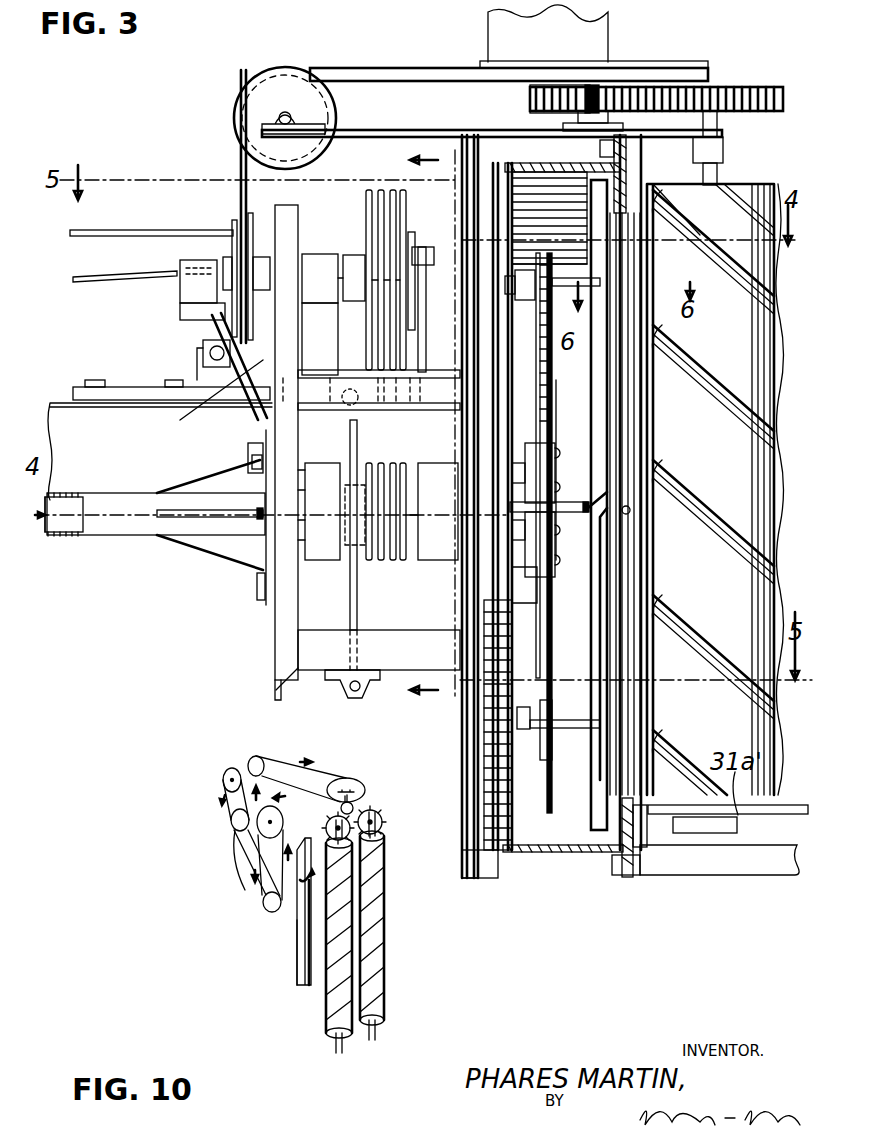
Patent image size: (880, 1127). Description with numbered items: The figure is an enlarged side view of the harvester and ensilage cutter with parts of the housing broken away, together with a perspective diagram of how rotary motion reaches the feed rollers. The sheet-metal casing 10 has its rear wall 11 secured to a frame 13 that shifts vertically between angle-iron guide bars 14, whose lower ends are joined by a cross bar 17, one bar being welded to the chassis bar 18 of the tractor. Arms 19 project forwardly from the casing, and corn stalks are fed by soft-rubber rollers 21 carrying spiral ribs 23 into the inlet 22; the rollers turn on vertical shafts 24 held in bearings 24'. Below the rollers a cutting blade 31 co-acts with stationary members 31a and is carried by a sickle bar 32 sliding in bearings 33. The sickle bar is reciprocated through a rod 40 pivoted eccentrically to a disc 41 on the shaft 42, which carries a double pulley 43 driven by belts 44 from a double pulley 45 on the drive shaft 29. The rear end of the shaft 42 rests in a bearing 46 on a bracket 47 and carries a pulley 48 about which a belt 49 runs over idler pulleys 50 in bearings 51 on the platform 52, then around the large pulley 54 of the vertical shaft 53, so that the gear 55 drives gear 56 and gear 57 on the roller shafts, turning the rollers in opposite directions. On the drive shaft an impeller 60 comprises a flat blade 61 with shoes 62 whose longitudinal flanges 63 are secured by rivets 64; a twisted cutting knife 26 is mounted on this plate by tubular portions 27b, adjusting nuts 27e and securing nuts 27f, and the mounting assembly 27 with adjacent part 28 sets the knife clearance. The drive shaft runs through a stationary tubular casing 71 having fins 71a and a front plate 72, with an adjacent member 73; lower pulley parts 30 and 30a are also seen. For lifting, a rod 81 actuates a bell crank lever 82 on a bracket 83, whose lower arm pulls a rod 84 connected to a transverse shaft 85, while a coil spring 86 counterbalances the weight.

In FIG. 3, the casing 10 is at (560, 840).
In FIG. 3, the rear wall 11 is at (439, 506).
In FIG. 3, the frame 13 is at (405, 662).
In FIG. 3, the guide bars 14 is at (272, 612).
In FIG. 3, the cross bar 17 is at (276, 672).
In FIG. 3, the chassis bar 18 is at (64, 412).
In FIG. 3, the arms 19 is at (765, 875).
In FIG. 3, the rollers 21 is at (748, 398).
In FIG. 10, the rollers 21 is at (373, 975).
In FIG. 3, the inlet 22 is at (625, 230).
In FIG. 3, the spirally extending ribs 23 is at (710, 210).
In FIG. 10, the spirally extending ribs 23 is at (380, 895).
In FIG. 3, the shafts 24 is at (742, 166).
In FIG. 10, the shafts 24 is at (356, 1057).
In FIG. 3, the bearings 24' is at (736, 137).
In FIG. 3, the cutting knife 26 is at (595, 555).
In FIG. 10, the cutting knife 26 is at (300, 960).
In FIG. 3, the housing side plate 27 is at (600, 610).
In FIG. 10, the housing side plate 27 is at (305, 990).
In FIG. 3, the tubular portions 27b is at (562, 288).
In FIG. 3, the adjusting nuts 27e is at (540, 258).
In FIG. 3, the securing nuts 27f is at (528, 720).
In FIG. 3, the guide finger 28 is at (608, 510).
In FIG. 3, the drive shaft 29 is at (68, 520).
In FIG. 10, the drive shaft 29 is at (297, 925).
In FIG. 3, the lower pulley 30 is at (440, 560).
In FIG. 3, the lower drum 30a is at (330, 452).
In FIG. 3, the cutting blade 31 is at (686, 850).
In FIG. 3, the stationary members 31a is at (768, 835).
In FIG. 3, the sickle bar 32 is at (660, 860).
In FIG. 3, the bearings 33 is at (620, 860).
In FIG. 3, the link or rod 40 is at (426, 308).
In FIG. 3, the disc 41 is at (413, 238).
In FIG. 3, the shaft 42 is at (335, 262).
In FIG. 10, the shaft 42 is at (260, 845).
In FIG. 3, the double pulley 43 is at (365, 205).
In FIG. 10, the double pulley 43 is at (262, 880).
In FIG. 3, the belts 44 is at (398, 420).
In FIG. 10, the belts 44 is at (265, 905).
In FIG. 3, the double pulley 45 is at (410, 555).
In FIG. 3, the bearing 46 is at (178, 310).
In FIG. 3, the bracket 47 is at (235, 408).
In FIG. 3, the pulley 48 is at (232, 222).
In FIG. 10, the pulley 48 is at (230, 828).
In FIG. 3, the belt 49 is at (240, 175).
In FIG. 10, the belt 49 is at (282, 790).
In FIG. 3, the idler pulleys 50 is at (310, 95).
In FIG. 10, the idler pulleys 50 is at (240, 762).
In FIG. 3, the bearings 51 is at (285, 112).
In FIG. 3, the platform 52 is at (390, 131).
In FIG. 3, the vertical shaft 53 is at (598, 88).
In FIG. 10, the vertical shaft 53 is at (340, 812).
In FIG. 3, the large pulley 54 is at (510, 62).
In FIG. 10, the large pulley 54 is at (355, 784).
In FIG. 3, the gear 55 is at (568, 87).
In FIG. 10, the gear 55 is at (352, 806).
In FIG. 3, the gear 56 is at (752, 88).
In FIG. 10, the gear 56 is at (326, 828).
In FIG. 10, the gear 57 is at (382, 822).
In FIG. 3, the impeller 60 is at (540, 620).
In FIG. 3, the flat blade 61 is at (548, 400).
In FIG. 3, the shoes 62 is at (558, 528).
In FIG. 3, the longitudinal flanges 63 is at (558, 450).
In FIG. 3, the rivets 64 is at (562, 500).
In FIG. 3, the tubular casing 71 is at (156, 496).
In FIG. 3, the fins 71a is at (212, 510).
In FIG. 3, the plate 72 is at (238, 560).
In FIG. 3, the bolt 73 is at (258, 585).
In FIG. 3, the rod 81 is at (110, 231).
In FIG. 3, the bell crank lever 82 is at (182, 418).
In FIG. 3, the bracket 83 is at (197, 380).
In FIG. 3, the rod 84 is at (357, 600).
In FIG. 3, the rod or shaft 85 is at (352, 690).
In FIG. 3, the coil spring 86 is at (128, 276).